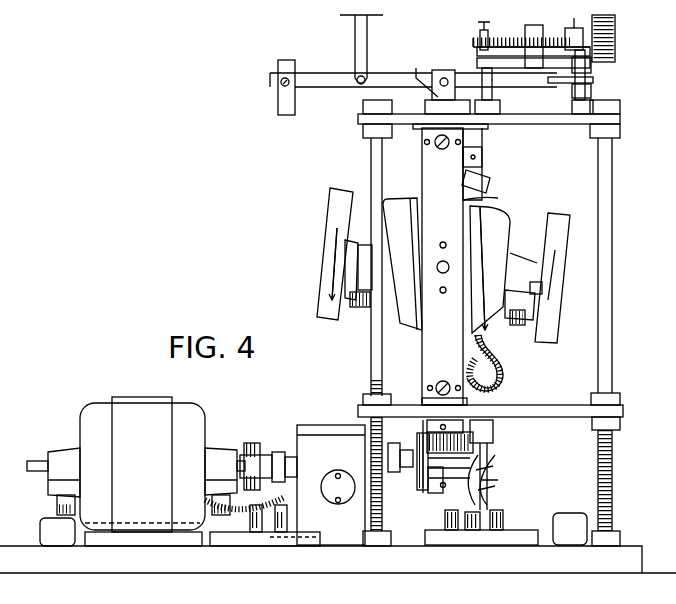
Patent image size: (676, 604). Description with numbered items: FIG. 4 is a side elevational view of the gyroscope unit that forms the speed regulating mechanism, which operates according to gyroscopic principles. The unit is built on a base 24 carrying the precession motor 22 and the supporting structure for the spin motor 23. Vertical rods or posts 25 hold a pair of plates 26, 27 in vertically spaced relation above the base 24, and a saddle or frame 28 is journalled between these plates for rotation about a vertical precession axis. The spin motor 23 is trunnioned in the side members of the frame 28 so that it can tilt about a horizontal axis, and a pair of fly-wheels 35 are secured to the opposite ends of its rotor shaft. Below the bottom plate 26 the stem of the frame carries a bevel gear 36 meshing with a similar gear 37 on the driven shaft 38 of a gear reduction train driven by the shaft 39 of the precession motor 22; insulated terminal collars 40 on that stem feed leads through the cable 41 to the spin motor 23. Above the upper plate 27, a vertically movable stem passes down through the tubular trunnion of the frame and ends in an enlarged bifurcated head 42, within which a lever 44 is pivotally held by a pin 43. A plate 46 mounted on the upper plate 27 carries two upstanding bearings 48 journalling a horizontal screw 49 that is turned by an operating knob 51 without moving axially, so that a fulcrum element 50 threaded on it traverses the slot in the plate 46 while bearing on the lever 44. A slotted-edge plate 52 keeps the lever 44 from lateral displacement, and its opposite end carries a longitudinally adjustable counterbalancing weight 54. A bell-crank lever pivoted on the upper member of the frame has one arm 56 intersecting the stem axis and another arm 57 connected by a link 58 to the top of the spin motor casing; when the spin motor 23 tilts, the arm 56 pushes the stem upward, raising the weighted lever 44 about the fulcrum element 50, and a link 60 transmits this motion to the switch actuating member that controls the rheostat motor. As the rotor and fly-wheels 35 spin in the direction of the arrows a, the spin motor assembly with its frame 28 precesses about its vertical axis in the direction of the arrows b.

The precession motor 22 is at (132, 471).
The spin motor 23 is at (496, 322).
The base 24 is at (161, 567).
The vertical rods or posts 25 is at (372, 344).
The bottom plate 26 is at (533, 417).
The upper plate 27 is at (543, 125).
The saddle or frame 28 is at (433, 360).
The fly-wheels 35 is at (337, 203).
The bevel gear 36 is at (460, 445).
The gear 37 is at (396, 485).
The driven shaft 38 is at (420, 456).
The shaft of the precession motor 39 is at (249, 450).
The terminal collars 40 is at (470, 468).
The cable 41 is at (503, 378).
The bifurcated head 42 is at (416, 72).
The pivot pin 43 is at (444, 78).
The lever 44 is at (333, 88).
The plate 46 is at (569, 57).
The upstanding bearings 48 is at (485, 31).
The screw 49 is at (506, 36).
The fulcrum element 50 is at (539, 26).
The operating knob 51 is at (612, 23).
The plate having a slotted edge 52 is at (576, 81).
The counterbalancing weight 54 is at (283, 68).
The bell crank lever arm 56 is at (485, 172).
The bell-crank lever arm 57 is at (492, 183).
The link 58 is at (470, 199).
The link 60 is at (367, 32).
The arrows a is at (330, 248).
The arrows b is at (462, 347).